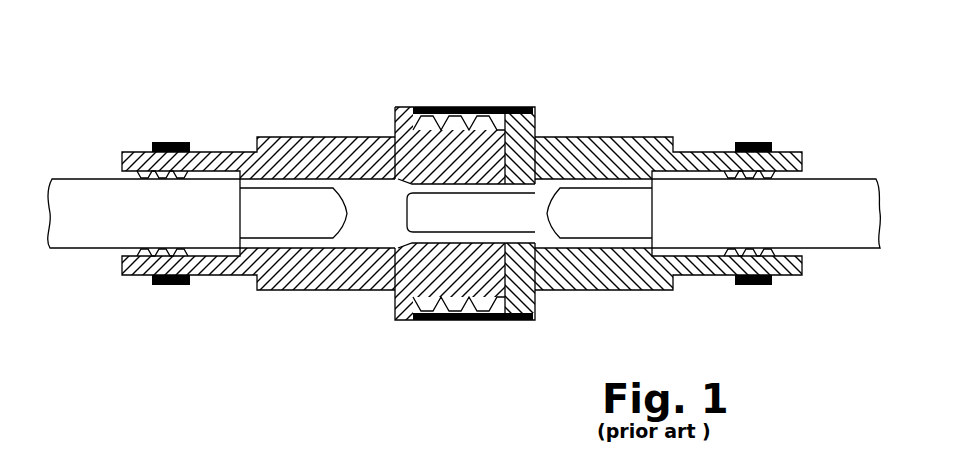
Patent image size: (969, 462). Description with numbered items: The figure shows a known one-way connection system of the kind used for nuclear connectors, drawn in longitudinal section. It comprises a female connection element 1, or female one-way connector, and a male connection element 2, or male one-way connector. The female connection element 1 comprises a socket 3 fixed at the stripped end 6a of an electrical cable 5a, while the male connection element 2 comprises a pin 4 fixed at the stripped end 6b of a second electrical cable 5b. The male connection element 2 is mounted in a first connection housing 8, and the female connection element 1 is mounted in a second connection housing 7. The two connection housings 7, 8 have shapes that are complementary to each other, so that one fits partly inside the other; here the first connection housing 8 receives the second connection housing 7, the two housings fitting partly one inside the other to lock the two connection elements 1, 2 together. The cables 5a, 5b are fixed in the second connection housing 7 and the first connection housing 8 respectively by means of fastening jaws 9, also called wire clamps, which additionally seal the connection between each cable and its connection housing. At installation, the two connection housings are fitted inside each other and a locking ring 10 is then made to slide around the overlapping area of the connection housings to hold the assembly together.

The female connection element 1 is at (216, 331).
The male connection element 2 is at (742, 318).
The socket 3 is at (375, 232).
The pin 4 is at (533, 213).
The electrical cable 5a is at (73, 179).
The electrical cable 5b is at (850, 179).
The stripped end 6a is at (288, 206).
The stripped end 6b is at (617, 212).
The second connection housing 7 is at (372, 150).
The first connection housing 8 is at (610, 152).
The fastening jaws 9 is at (757, 142).
The locking ring 10 is at (478, 320).